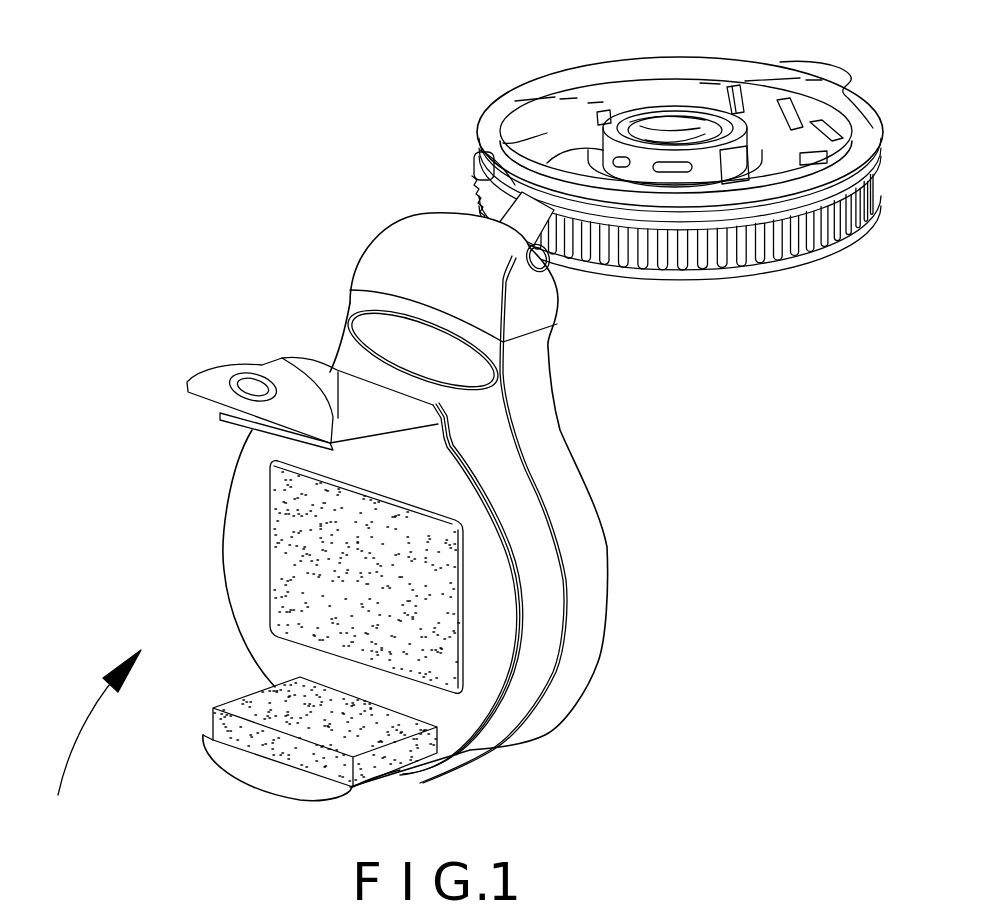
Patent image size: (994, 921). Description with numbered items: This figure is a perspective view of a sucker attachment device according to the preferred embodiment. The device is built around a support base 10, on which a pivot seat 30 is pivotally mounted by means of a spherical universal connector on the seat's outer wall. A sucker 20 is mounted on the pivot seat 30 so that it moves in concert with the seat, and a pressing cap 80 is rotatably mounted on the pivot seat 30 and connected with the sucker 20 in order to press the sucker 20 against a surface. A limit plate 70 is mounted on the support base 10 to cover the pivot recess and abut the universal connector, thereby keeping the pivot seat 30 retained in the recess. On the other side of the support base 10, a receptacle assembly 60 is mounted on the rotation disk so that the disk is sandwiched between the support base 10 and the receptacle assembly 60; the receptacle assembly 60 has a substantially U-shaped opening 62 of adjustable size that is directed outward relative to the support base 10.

The support base 10 is at (588, 550).
The sucker 20 is at (540, 84).
The pivot seat 30 is at (478, 150).
The receptacle assembly 60 is at (535, 652).
The opening 62 is at (81, 756).
The limit plate 70 is at (397, 240).
The pressing cap 80 is at (778, 258).